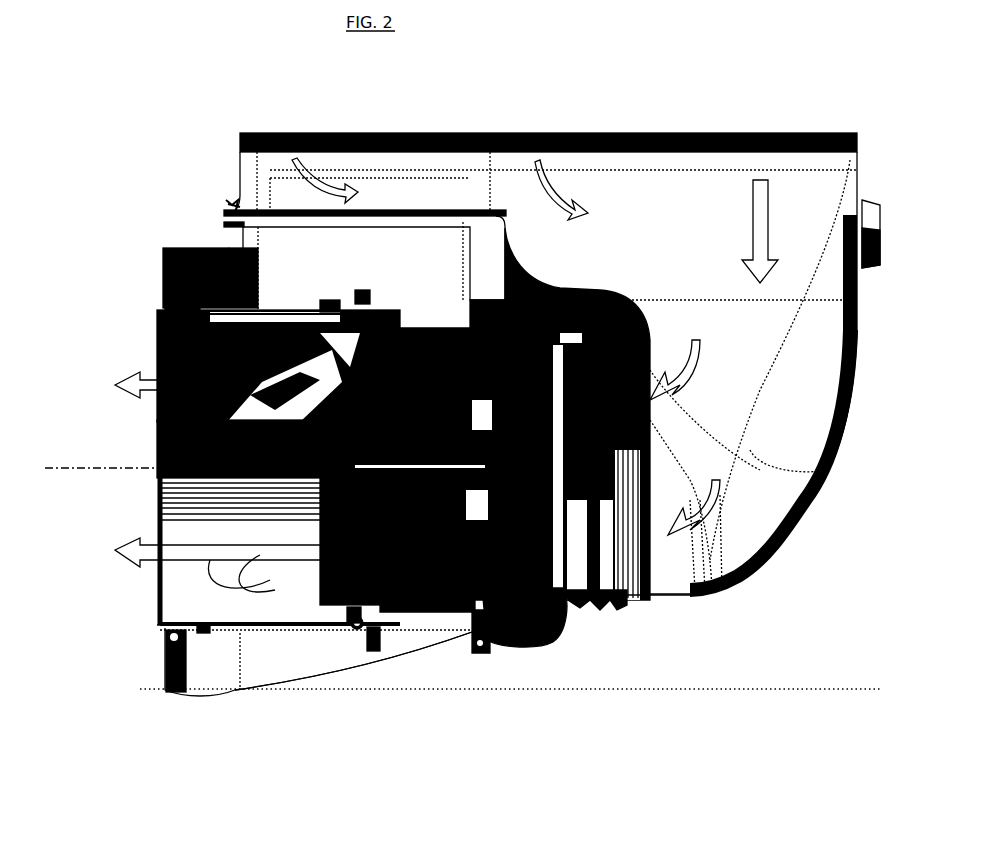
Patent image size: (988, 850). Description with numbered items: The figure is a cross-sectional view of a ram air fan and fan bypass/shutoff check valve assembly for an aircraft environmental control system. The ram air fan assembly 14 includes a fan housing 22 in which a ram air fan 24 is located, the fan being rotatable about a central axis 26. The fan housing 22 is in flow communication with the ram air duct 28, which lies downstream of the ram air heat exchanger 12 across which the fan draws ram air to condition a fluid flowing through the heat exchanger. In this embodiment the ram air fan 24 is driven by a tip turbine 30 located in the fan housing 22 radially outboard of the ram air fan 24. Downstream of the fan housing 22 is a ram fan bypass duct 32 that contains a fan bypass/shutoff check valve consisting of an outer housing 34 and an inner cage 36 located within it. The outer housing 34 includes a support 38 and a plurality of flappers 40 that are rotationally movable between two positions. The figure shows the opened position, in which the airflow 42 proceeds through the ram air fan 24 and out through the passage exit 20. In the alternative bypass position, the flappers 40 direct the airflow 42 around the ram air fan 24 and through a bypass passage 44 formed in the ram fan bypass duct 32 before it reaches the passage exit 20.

The ram air heat exchanger 12 is at (531, 121).
The ram air fan assembly 14 is at (178, 133).
The passage exit 20 is at (158, 363).
The fan housing 22 is at (548, 640).
The ram air fan 24 is at (475, 543).
The central axis 26 is at (105, 462).
The ram air duct 28 is at (795, 400).
The tip turbine 30 is at (430, 612).
The ram fan bypass duct 32 is at (325, 678).
The outer housing 34 is at (258, 632).
The inner cage 36 is at (178, 493).
The support 38 is at (160, 623).
The flapper 40 is at (163, 288).
The airflow 42 is at (587, 200).
The bypass passage 44 is at (305, 290).